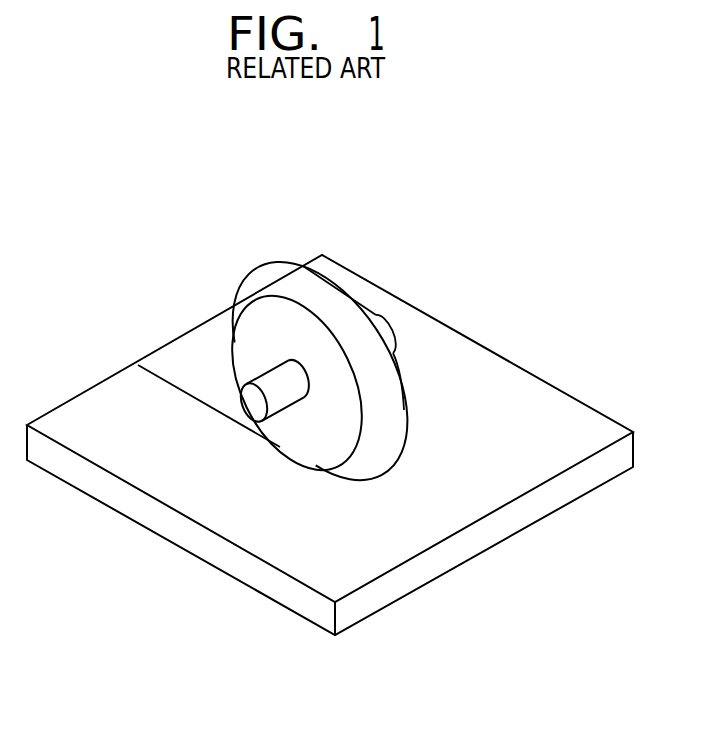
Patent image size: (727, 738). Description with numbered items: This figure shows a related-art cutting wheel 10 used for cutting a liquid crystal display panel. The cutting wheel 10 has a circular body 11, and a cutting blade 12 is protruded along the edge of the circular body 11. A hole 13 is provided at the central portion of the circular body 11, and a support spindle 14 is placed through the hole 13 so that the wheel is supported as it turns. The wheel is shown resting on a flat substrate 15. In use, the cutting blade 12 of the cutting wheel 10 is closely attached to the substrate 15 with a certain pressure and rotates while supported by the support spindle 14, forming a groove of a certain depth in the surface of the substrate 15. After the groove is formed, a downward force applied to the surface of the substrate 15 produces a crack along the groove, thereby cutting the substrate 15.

The cutting wheel 10 is at (241, 270).
The circular body 11 is at (237, 342).
The cutting blade 12 is at (344, 287).
The hole 13 is at (305, 407).
The support spindle 14 is at (262, 383).
The substrate 15 is at (98, 397).